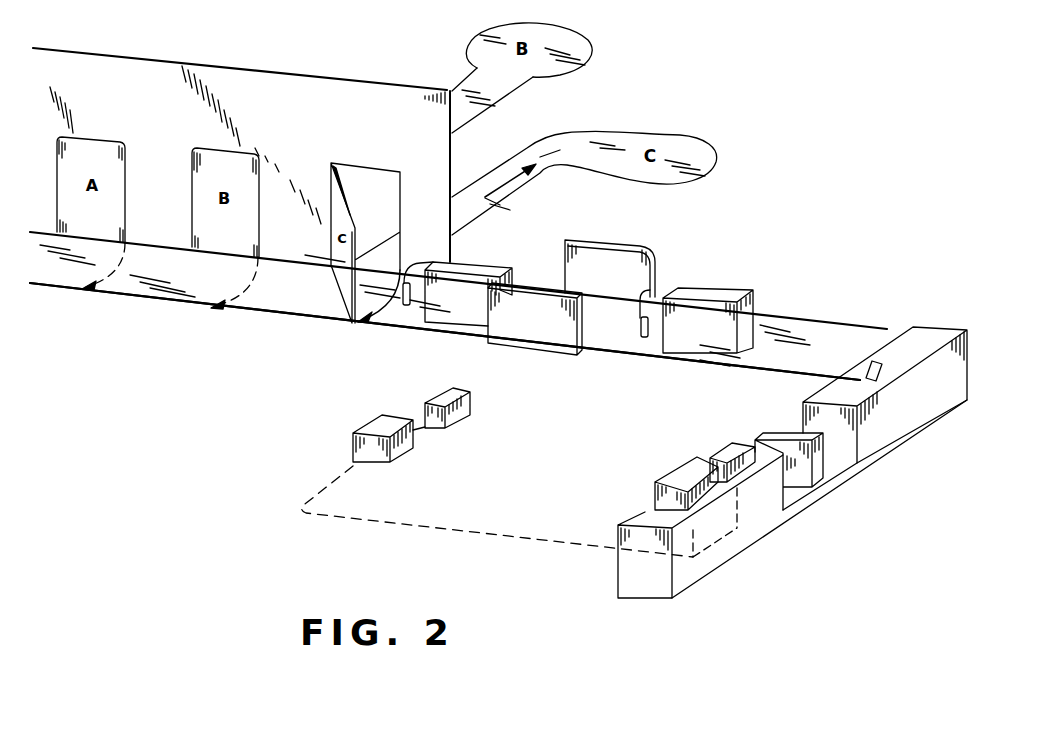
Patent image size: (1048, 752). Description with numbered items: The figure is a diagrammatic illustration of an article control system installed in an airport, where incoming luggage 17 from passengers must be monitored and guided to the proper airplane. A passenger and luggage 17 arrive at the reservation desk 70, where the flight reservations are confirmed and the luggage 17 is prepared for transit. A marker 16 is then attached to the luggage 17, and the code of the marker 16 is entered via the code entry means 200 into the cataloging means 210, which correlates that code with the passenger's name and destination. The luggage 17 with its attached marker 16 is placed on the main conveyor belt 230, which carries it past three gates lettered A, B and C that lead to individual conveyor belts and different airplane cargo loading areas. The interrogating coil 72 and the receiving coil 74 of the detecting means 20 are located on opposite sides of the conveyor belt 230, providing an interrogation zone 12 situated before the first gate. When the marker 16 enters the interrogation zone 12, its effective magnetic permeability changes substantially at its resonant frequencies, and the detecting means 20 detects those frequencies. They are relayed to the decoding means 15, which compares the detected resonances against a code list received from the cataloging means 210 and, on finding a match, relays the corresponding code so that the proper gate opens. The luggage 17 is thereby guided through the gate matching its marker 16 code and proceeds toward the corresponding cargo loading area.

The interrogation zone 12 is at (632, 338).
The decoding means 15 is at (352, 450).
The marker 16 is at (405, 306).
The luggage 17 is at (470, 262).
The detecting means 20 is at (438, 395).
The reservation desk 70 is at (945, 386).
The interrogating coil 72 is at (620, 241).
The receiving coil 74 is at (541, 328).
The code entry means 200 is at (725, 446).
The cataloging means 210 is at (672, 474).
The conveyor belt 230 is at (745, 375).